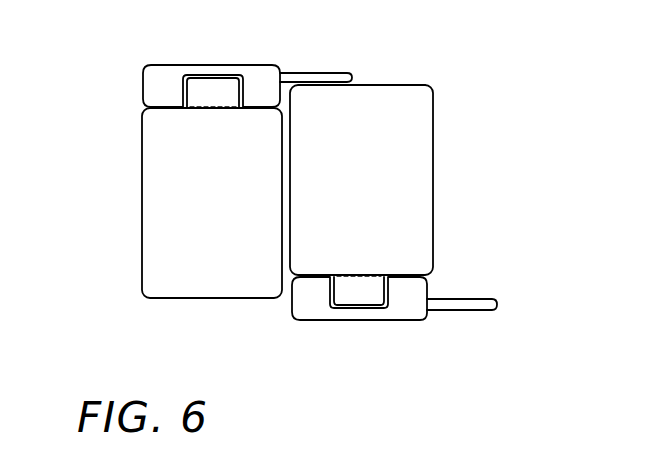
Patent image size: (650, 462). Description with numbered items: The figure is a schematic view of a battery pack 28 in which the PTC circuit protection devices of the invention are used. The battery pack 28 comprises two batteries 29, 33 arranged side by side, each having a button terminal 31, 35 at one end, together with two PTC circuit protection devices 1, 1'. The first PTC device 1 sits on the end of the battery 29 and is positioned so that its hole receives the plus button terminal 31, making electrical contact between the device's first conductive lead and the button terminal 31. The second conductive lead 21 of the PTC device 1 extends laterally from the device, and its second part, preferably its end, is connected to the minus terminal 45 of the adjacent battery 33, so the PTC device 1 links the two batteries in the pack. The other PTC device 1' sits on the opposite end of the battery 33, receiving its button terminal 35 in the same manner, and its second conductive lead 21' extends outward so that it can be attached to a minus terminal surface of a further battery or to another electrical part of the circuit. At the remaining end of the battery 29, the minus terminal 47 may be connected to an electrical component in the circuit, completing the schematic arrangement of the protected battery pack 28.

The PTC circuit protection device 1 is at (211, 60).
The PTC circuit protection device 1' is at (359, 327).
The second conductive lead 21 is at (316, 52).
The second conductive lead 21' is at (477, 338).
The battery pack 28 is at (445, 185).
The battery 29 is at (176, 207).
The button terminal 31 is at (213, 87).
The battery 33 is at (415, 97).
The button terminal 35 is at (362, 297).
The minus terminal 45 is at (377, 85).
The minus terminal 47 is at (227, 300).